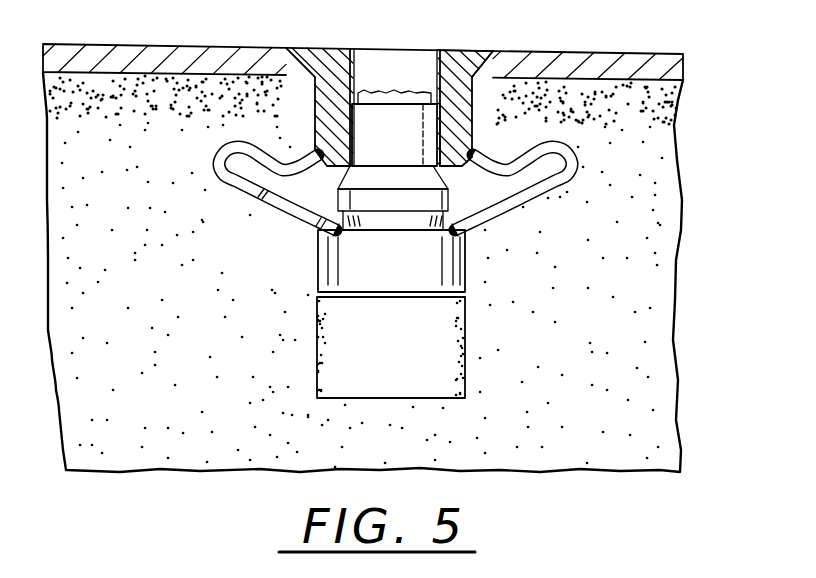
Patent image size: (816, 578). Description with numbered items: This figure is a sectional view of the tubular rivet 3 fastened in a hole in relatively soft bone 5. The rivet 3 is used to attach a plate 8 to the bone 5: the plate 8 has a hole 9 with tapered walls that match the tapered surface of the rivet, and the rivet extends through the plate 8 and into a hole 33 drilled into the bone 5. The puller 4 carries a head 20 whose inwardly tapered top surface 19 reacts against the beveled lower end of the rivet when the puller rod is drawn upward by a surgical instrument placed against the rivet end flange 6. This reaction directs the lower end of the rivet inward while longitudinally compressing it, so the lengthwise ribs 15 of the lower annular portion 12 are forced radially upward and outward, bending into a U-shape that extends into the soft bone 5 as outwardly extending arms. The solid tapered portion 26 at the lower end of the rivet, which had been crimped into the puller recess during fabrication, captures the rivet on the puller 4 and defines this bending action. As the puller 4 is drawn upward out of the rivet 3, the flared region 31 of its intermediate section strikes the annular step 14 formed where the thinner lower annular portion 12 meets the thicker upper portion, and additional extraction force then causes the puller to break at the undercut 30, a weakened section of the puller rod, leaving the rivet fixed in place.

The tubular rivet 3 is at (454, 46).
The puller 4 is at (397, 105).
The bone 5 is at (666, 301).
The rivet end flange 6 is at (324, 62).
The plate 8 is at (176, 53).
The hole 9 is at (482, 55).
The lower annular portion 12 is at (215, 147).
The annular step 14 is at (442, 183).
The lengthwise ribs 15 is at (255, 196).
The inwardly tapered top surface 19 is at (318, 232).
The head 20 is at (370, 282).
The solid tapered portion 26 is at (312, 226).
The undercut 30 is at (355, 97).
The flared region 31 is at (447, 182).
The hole 33 is at (465, 352).